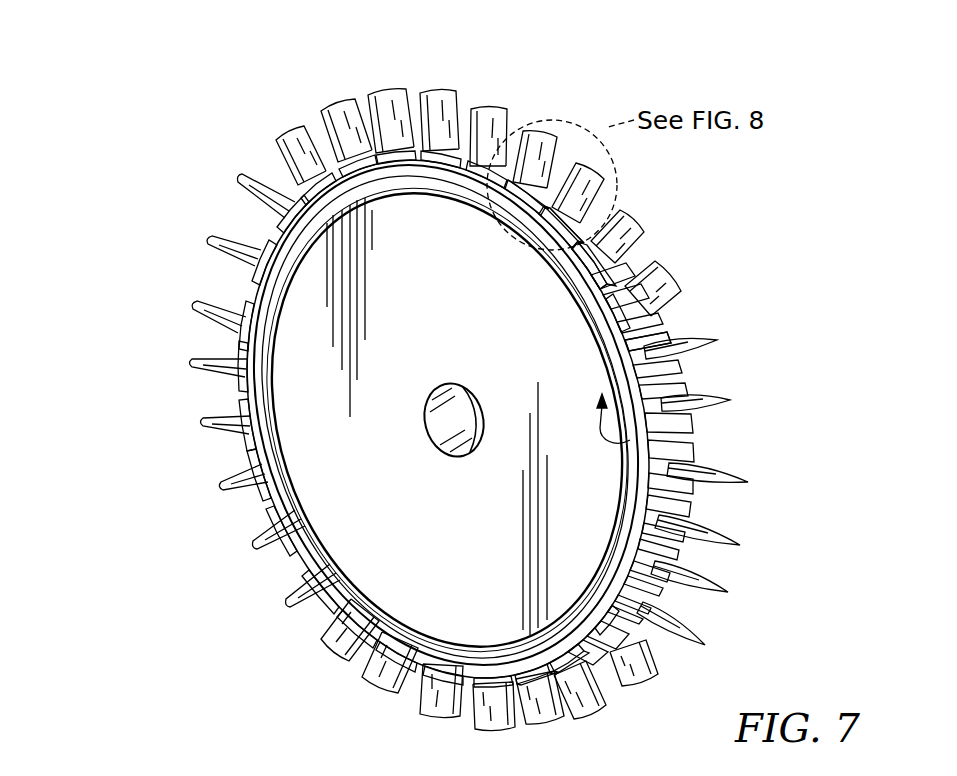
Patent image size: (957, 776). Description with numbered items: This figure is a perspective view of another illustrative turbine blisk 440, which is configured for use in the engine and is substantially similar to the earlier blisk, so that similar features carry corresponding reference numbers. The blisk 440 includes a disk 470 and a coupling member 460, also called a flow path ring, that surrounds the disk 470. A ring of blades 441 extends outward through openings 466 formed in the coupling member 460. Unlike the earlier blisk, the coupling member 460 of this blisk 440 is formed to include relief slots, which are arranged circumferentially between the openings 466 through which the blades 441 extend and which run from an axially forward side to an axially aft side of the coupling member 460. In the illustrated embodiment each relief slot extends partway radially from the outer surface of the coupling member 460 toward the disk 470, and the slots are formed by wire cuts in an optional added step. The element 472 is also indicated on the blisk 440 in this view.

The blisk 440 is at (172, 203).
The blades 441 is at (464, 82).
The openings 466 is at (606, 220).
The coupling member 460 is at (612, 217).
The leading edge 472 is at (650, 333).
The disk 470 is at (630, 440).